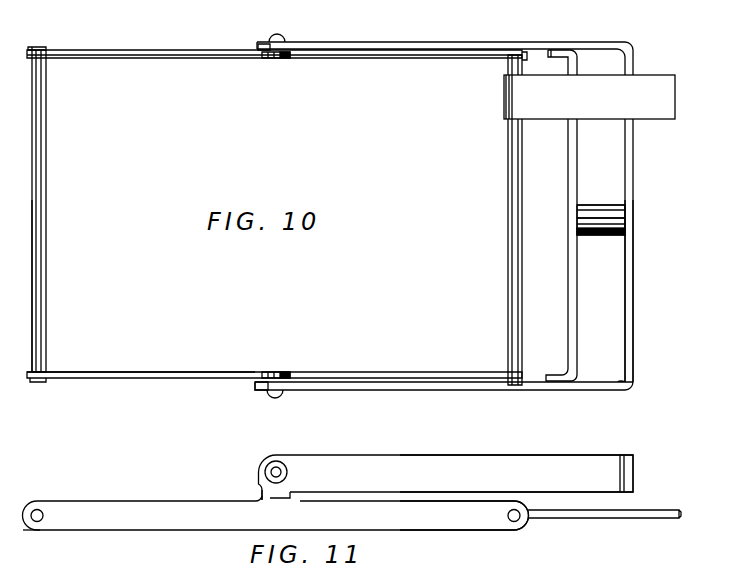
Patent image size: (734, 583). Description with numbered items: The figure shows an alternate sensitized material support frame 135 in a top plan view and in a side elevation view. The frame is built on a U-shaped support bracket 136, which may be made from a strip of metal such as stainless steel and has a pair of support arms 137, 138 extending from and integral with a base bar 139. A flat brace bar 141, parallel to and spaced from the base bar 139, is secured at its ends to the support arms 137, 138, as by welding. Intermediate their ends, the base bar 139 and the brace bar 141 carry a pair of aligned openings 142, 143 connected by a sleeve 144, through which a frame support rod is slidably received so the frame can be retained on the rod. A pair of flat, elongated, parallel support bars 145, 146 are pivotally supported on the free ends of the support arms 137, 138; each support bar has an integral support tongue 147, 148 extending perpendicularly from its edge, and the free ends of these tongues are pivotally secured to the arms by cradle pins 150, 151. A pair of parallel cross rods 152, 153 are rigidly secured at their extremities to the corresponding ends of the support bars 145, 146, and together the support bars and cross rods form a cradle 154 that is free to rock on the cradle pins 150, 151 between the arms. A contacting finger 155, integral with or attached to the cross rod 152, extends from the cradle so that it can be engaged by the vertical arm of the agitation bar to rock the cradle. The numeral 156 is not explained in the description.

In FIG. 10, the alternate sensitized material support frame 135 is at (234, 402).
In FIG. 11, the alternate sensitized material support frame 135 is at (497, 545).
In FIG. 10, the U-shaped support bracket 136 is at (481, 220).
In FIG. 11, the U-shaped support bracket 136 is at (544, 461).
In FIG. 10, the support arm 137 is at (437, 388).
In FIG. 11, the support arm 137 is at (430, 470).
In FIG. 10, the support arm 138 is at (437, 45).
In FIG. 10, the base bar 139 is at (628, 305).
In FIG. 10, the flat brace bar 141 is at (574, 296).
In FIG. 10, the opening 142 is at (628, 222).
In FIG. 10, the opening 143 is at (572, 220).
In FIG. 10, the sleeve 144 is at (598, 214).
In FIG. 10, the support bar 145 is at (372, 375).
In FIG. 11, the support bar 145 is at (167, 517).
In FIG. 10, the support bar 146 is at (385, 59).
In FIG. 10, the support tongue 147 is at (272, 373).
In FIG. 11, the support tongue 147 is at (264, 495).
In FIG. 10, the support tongue 148 is at (279, 59).
In FIG. 10, the cradle pin 150 is at (277, 393).
In FIG. 11, the cradle pin 150 is at (282, 466).
In FIG. 10, the cradle pin 151 is at (283, 38).
In FIG. 10, the cross rod 152 is at (512, 170).
In FIG. 10, the cross rod 153 is at (43, 106).
In FIG. 10, the cradle 154 is at (54, 222).
In FIG. 10, the contacting finger 155 is at (658, 108).
In FIG. 11, the contacting finger 155 is at (645, 512).
In FIG. 11, the link 156 is at (60, 582).